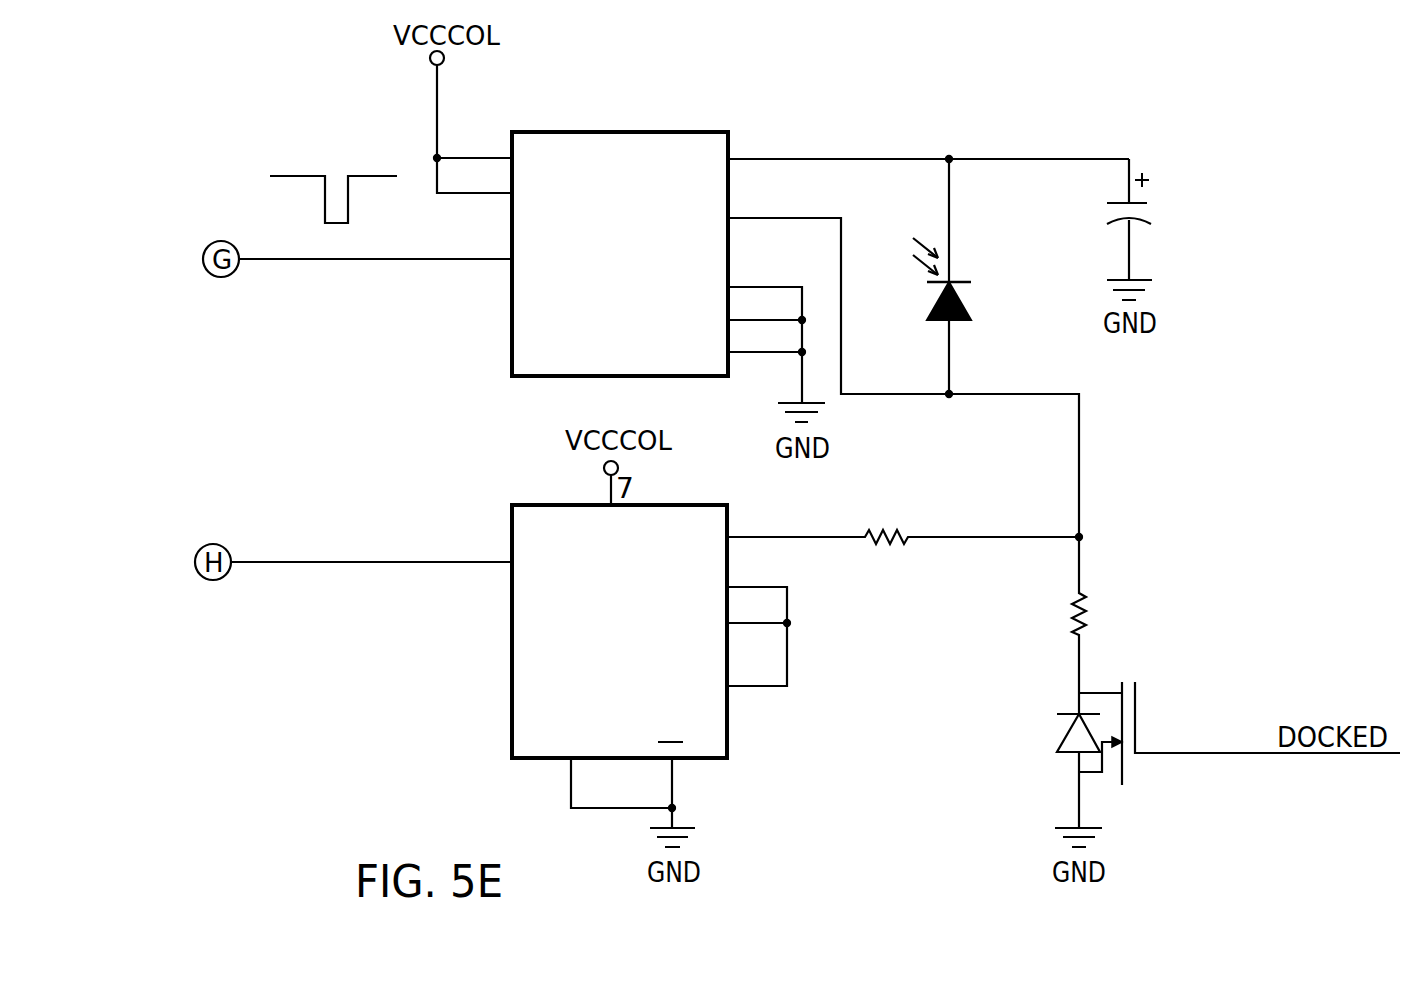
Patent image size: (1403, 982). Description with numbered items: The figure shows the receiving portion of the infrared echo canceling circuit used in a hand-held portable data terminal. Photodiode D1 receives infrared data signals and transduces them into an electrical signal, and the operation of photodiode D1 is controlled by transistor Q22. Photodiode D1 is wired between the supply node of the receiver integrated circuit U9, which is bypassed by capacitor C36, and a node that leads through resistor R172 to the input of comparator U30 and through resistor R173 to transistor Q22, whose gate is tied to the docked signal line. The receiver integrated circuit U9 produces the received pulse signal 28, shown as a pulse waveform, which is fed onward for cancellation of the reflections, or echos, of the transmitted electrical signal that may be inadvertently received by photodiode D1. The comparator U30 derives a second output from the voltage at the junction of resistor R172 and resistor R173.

The received pulse signal 28 is at (333, 173).
The infrared receiver IC SIRCOHH2 U9 is at (615, 254).
The comparator MAX931CSA U30 is at (687, 627).
The photodiode D1 is at (1003, 276).
The capacitor 10UF 6V C36 is at (1190, 219).
The resistor 1M R172 is at (903, 540).
The resistor 100K R173 is at (1109, 615).
The transistor Q22 is at (1228, 742).